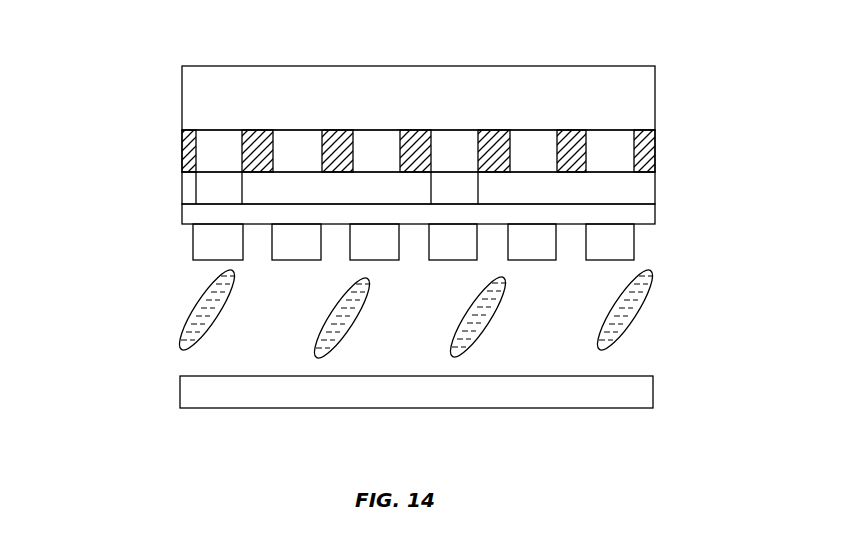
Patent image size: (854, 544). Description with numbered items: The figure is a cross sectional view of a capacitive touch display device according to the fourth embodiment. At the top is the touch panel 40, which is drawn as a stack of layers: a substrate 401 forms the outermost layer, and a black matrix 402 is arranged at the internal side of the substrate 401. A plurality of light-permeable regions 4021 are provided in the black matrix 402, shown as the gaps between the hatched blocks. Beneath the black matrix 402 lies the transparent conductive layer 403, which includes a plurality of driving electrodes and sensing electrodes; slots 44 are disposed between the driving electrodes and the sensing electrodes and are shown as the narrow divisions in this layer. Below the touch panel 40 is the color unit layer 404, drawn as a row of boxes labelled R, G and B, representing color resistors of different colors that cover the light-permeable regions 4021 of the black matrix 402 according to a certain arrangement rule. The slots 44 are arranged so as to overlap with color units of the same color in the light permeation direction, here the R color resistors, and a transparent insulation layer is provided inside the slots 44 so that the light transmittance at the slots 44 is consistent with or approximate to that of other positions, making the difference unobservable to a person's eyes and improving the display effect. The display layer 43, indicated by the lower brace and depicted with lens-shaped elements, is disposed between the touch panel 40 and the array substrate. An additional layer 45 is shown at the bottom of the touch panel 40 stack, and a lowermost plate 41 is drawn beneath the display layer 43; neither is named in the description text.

The touch panel 40 is at (80, 53).
The substrate 401 is at (655, 98).
The black matrix 402 is at (655, 146).
The light-permeable regions 4021 is at (223, 150).
The transparent conductive layer 403 is at (655, 193).
The slots 44 is at (210, 195).
The planarization layer 45 is at (655, 222).
The color unit layer 404 is at (634, 243).
The display layer 43 is at (137, 233).
The backlight module 41 is at (178, 410).